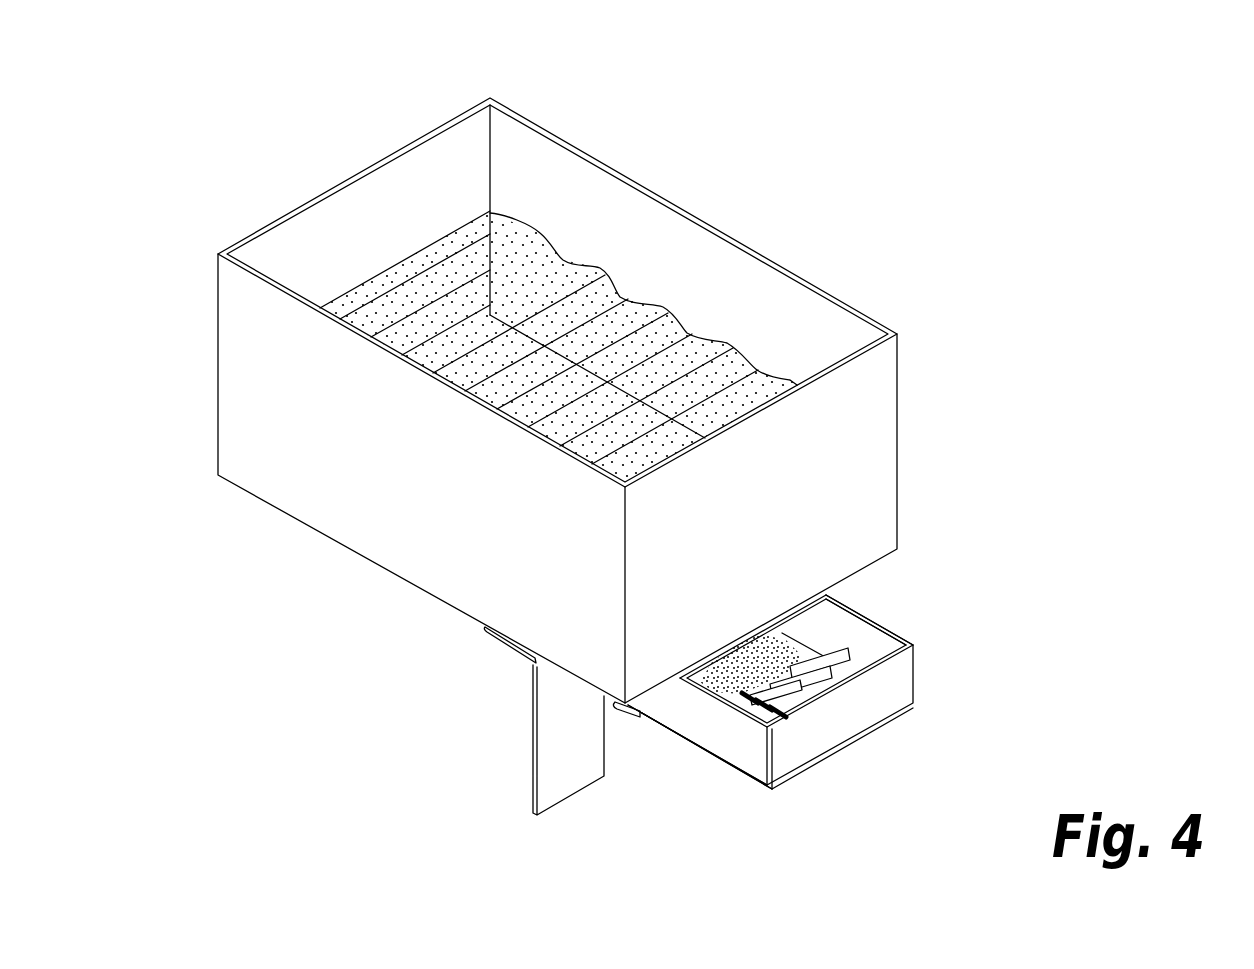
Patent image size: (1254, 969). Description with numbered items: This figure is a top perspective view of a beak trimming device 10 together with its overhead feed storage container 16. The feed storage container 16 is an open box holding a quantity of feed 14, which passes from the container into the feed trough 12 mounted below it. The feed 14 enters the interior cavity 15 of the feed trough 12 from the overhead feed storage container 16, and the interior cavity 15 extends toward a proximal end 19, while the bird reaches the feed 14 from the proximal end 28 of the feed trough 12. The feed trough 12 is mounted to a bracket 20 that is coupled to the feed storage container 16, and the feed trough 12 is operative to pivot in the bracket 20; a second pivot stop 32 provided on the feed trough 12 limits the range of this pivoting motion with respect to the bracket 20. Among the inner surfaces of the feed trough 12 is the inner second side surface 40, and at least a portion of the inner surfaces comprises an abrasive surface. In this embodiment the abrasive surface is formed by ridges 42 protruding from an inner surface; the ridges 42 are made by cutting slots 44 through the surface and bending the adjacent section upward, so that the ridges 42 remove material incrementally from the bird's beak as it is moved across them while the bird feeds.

The beak trimming device 10 is at (1108, 128).
The feed trough 12 is at (687, 740).
The feed 14 is at (660, 362).
The interior cavity 15 is at (838, 652).
The feed storage container 16 is at (898, 362).
The proximal end 19 is at (812, 688).
The bracket 20 is at (530, 657).
The proximal end 28 is at (880, 748).
The second pivot stop 32 is at (623, 710).
The inner second side surface 40 is at (823, 621).
The ridges 42 is at (848, 670).
The slots 44 is at (750, 786).